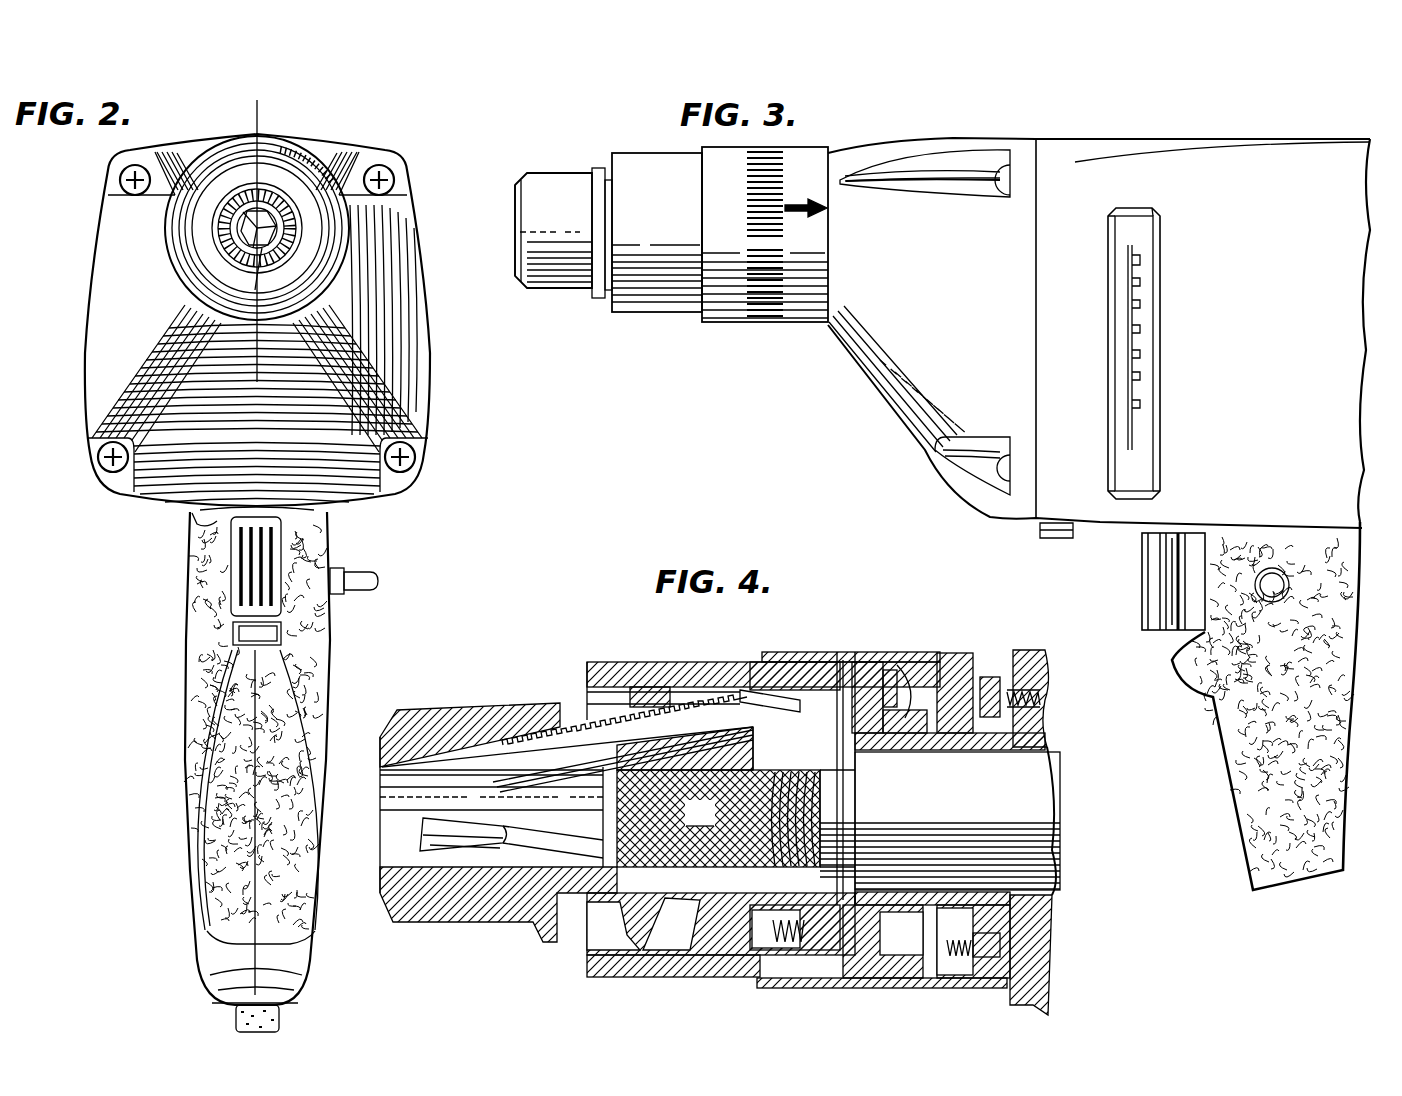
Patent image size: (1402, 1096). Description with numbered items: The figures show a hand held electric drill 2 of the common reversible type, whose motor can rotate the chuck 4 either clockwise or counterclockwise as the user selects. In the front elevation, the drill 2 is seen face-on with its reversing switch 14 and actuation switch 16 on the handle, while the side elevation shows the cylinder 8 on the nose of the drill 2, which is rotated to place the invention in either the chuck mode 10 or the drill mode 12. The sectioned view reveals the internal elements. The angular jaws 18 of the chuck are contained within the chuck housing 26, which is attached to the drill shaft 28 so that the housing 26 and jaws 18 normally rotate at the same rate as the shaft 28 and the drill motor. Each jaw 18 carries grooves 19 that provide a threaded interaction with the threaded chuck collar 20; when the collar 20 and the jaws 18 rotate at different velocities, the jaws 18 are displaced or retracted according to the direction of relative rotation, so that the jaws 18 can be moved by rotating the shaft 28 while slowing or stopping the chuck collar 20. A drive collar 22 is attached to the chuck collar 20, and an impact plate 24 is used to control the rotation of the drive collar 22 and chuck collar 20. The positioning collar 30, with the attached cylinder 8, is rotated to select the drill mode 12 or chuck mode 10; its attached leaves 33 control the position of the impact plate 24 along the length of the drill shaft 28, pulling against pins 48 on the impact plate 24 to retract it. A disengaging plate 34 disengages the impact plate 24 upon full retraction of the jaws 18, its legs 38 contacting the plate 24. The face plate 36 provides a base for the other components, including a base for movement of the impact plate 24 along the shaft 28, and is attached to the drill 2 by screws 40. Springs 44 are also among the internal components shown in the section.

In FIG. 2, the hand held electric drill 2 is at (417, 390).
In FIG. 3, the hand held electric drill 2 is at (1290, 355).
In FIG. 4, the hand held electric drill 2 is at (1048, 667).
In FIG. 2, the chuck 4 is at (220, 238).
In FIG. 3, the chuck 4 is at (562, 266).
In FIG. 2, the cylinder 8 is at (290, 150).
In FIG. 3, the cylinder 8 is at (726, 312).
In FIG. 4, the cylinder 8 is at (782, 655).
In FIG. 2, the chuck mode 10 is at (345, 220).
In FIG. 3, the chuck mode 10 is at (823, 215).
In FIG. 2, the drill mode 12 is at (318, 300).
In FIG. 3, the drill mode 12 is at (828, 320).
In FIG. 2, the reversing switch 14 is at (195, 520).
In FIG. 3, the reversing switch 14 is at (1060, 540).
In FIG. 2, the actuation switch 16 is at (233, 572).
In FIG. 3, the actuation switch 16 is at (1157, 594).
In FIG. 2, the angular jaws 18 is at (283, 253).
In FIG. 4, the angular jaws 18 is at (483, 750).
In FIG. 4, the grooves 19 is at (580, 727).
In FIG. 4, the threaded chuck collar 20 is at (648, 703).
In FIG. 4, the drive collar 22 is at (595, 672).
In FIG. 4, the impact plate 24 is at (848, 680).
In FIG. 4, the chuck housing 26 is at (408, 722).
In FIG. 4, the drill shaft 28 is at (718, 797).
In FIG. 4, the positioning collar 30 is at (982, 665).
In FIG. 4, the leaves 33 is at (898, 680).
In FIG. 4, the disengaging plate 34 is at (760, 690).
In FIG. 4, the face plate 36 is at (1010, 665).
In FIG. 4, the legs 38 is at (823, 705).
In FIG. 4, the screws 40 is at (1047, 697).
In FIG. 4, the springs 44 is at (800, 945).
In FIG. 4, the pins 48 is at (958, 660).